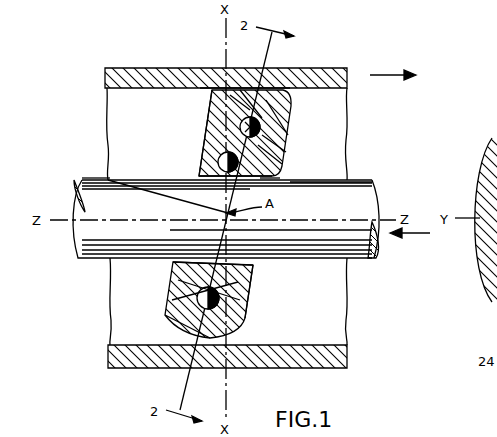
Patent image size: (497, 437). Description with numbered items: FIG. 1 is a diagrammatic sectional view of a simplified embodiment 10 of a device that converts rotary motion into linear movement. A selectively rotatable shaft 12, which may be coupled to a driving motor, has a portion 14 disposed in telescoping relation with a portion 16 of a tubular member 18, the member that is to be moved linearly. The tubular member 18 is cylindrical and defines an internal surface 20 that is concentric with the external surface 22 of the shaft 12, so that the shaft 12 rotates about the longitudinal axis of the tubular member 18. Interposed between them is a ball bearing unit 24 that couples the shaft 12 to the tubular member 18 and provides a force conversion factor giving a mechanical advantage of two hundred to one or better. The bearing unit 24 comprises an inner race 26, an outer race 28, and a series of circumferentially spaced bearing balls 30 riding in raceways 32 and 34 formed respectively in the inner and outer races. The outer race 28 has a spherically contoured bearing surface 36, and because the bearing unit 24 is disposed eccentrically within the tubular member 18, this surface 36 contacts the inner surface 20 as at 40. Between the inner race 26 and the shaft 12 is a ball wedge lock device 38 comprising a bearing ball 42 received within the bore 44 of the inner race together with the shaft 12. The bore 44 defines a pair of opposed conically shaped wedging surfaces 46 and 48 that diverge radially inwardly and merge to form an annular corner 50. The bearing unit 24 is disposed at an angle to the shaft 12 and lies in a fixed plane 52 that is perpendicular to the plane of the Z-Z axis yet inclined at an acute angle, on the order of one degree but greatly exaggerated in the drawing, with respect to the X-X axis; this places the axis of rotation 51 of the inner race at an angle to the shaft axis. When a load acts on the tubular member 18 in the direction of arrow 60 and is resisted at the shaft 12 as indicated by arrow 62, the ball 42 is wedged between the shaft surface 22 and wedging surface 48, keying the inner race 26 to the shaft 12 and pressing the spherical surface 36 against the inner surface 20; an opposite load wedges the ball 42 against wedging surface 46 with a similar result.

The simplified embodiment of the invention 10 is at (438, 88).
The shaft 12 is at (369, 178).
The portion of shaft 14 is at (325, 190).
The portion of tubular member 16 is at (346, 72).
The tubular member 18 is at (317, 70).
The internal surface 20 is at (340, 112).
The external surface 22 is at (362, 198).
The ball bearing unit 24 is at (192, 113).
The inner race 26 is at (215, 152).
The outer race 28 is at (210, 92).
The bearing balls 30 is at (226, 88).
The raceway 32 is at (282, 150).
The raceway 34 is at (268, 78).
The spherically contoured bearing surface 36 is at (278, 108).
The ball wedge lock device 38 is at (200, 183).
The contact point 40 is at (233, 95).
The bearing ball 42 is at (218, 157).
The bore 44 is at (260, 262).
The wedging surface 46 is at (278, 180).
The wedging surface 48 is at (176, 262).
The annular corner 50 is at (250, 296).
The axis of rotation 51 is at (95, 177).
The fixed plane 52 is at (185, 384).
The arrow 60 is at (396, 72).
The arrow 62 is at (428, 236).